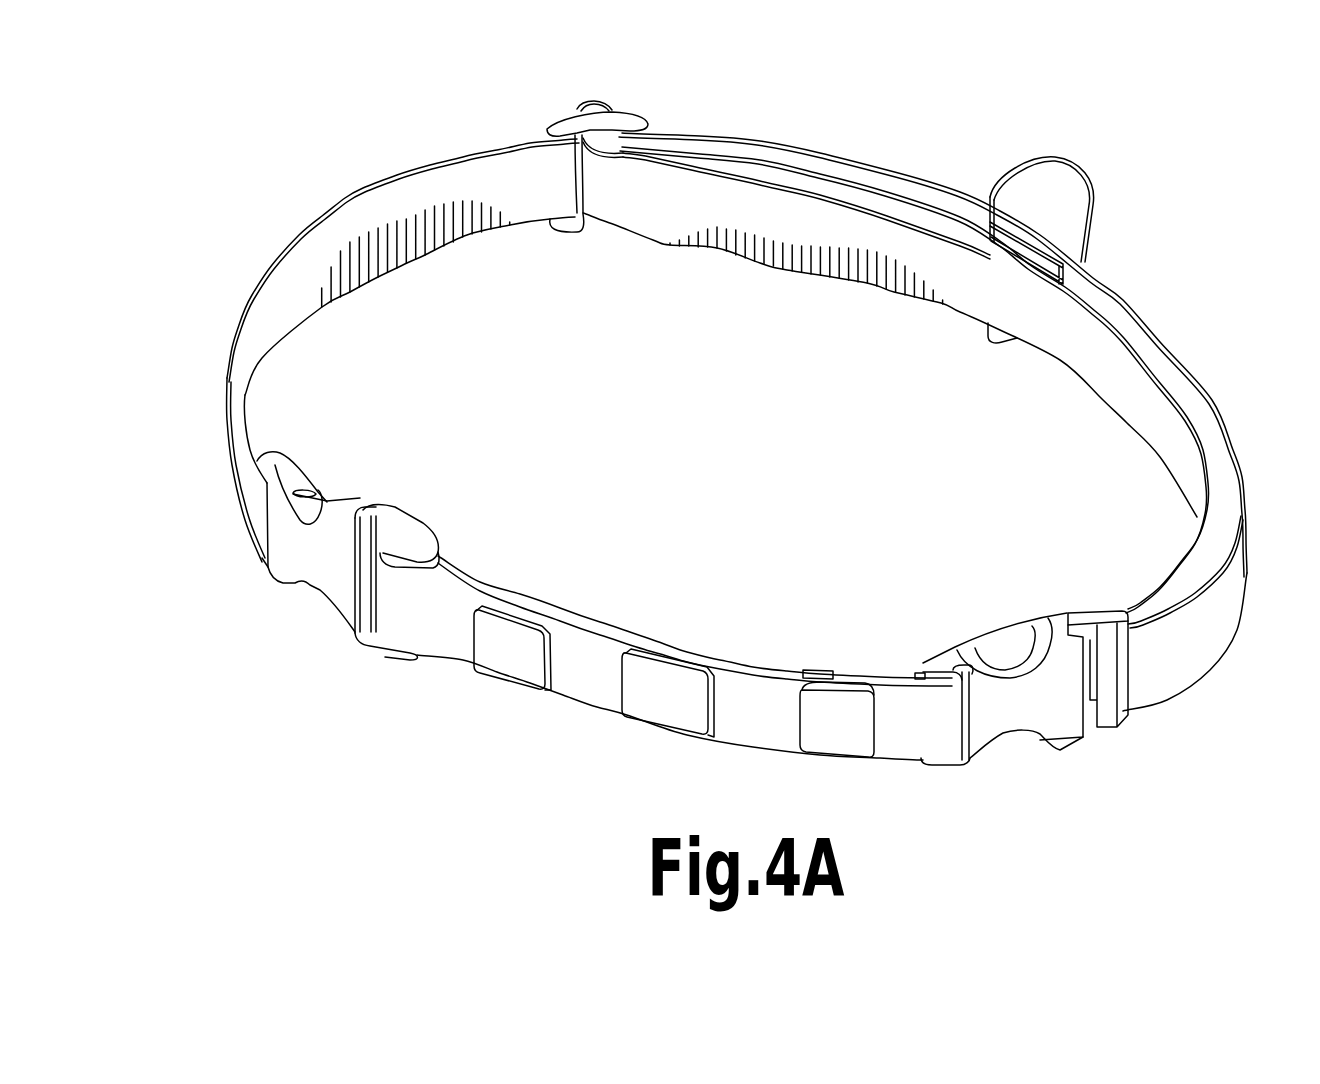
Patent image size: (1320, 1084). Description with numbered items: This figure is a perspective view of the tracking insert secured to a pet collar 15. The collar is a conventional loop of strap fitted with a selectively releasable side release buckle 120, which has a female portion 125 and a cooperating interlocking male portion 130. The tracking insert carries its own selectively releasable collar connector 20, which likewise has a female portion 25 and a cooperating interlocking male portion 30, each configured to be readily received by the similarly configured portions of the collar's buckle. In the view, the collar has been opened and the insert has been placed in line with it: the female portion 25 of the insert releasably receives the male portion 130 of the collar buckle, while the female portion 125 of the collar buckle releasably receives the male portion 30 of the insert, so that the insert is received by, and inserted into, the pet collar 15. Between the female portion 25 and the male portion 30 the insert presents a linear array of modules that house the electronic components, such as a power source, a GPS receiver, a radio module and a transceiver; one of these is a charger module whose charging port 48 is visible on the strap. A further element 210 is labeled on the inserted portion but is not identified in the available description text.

The pet collar 15 is at (287, 267).
The collar connector 20 is at (1040, 718).
The female portion 25 is at (1047, 743).
The male portion 30 is at (318, 503).
The charging port 48 is at (815, 669).
The side release buckle 120 is at (351, 642).
The female portion 125 is at (317, 576).
The male portion 130 is at (1007, 656).
The strap assembly 210 is at (555, 788).